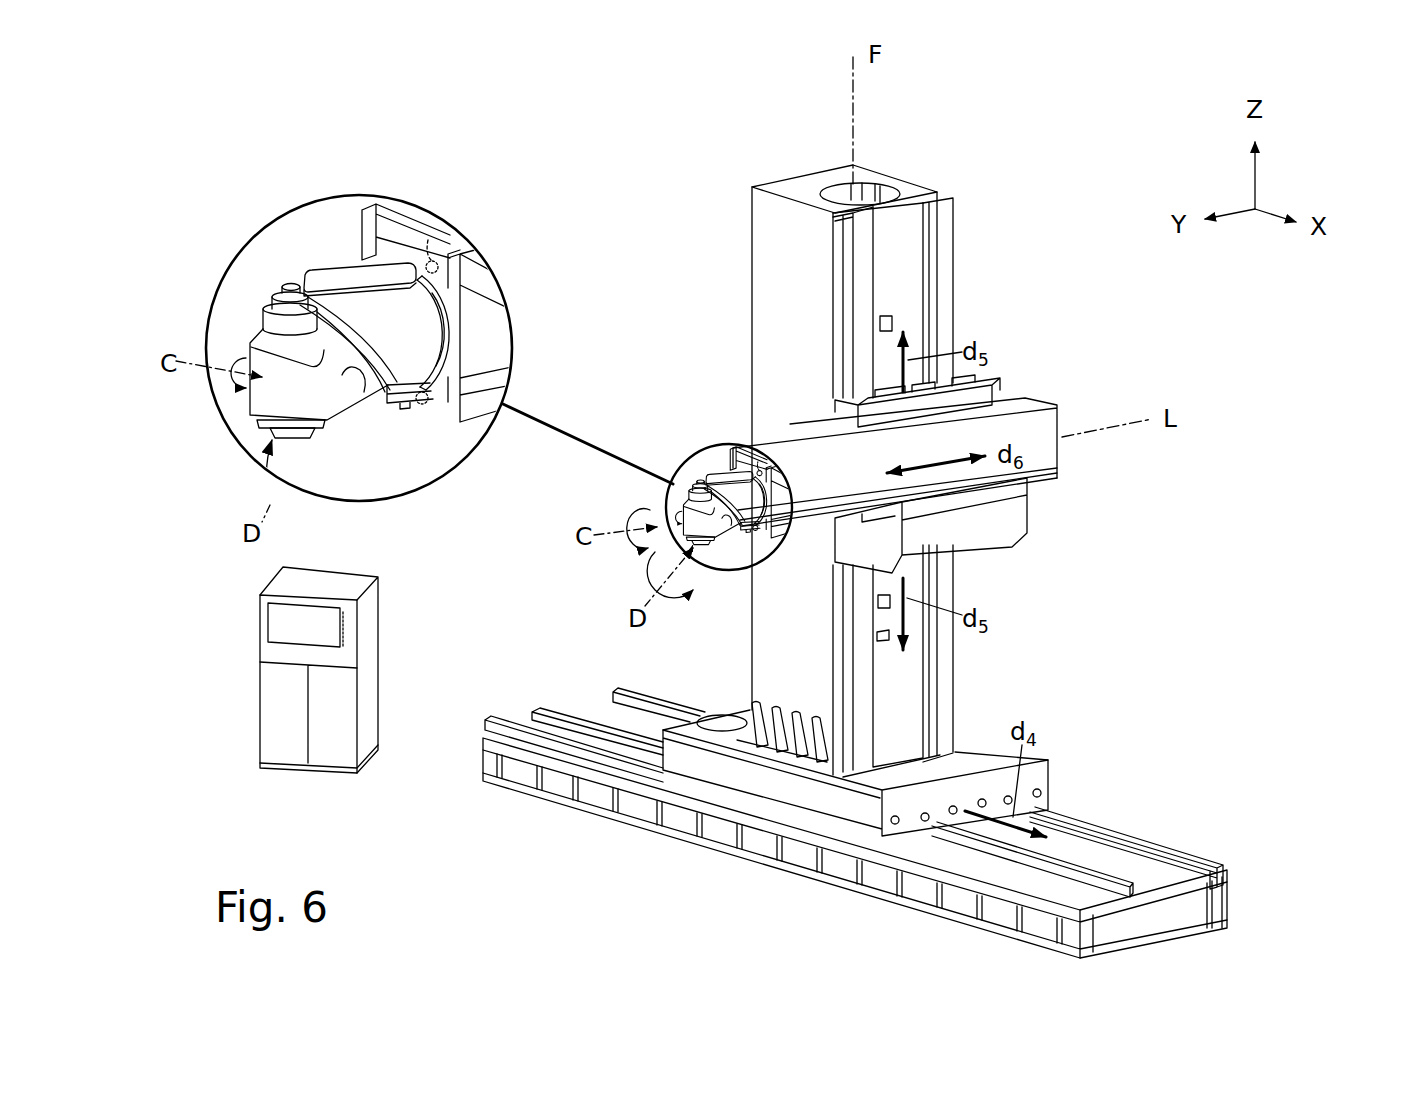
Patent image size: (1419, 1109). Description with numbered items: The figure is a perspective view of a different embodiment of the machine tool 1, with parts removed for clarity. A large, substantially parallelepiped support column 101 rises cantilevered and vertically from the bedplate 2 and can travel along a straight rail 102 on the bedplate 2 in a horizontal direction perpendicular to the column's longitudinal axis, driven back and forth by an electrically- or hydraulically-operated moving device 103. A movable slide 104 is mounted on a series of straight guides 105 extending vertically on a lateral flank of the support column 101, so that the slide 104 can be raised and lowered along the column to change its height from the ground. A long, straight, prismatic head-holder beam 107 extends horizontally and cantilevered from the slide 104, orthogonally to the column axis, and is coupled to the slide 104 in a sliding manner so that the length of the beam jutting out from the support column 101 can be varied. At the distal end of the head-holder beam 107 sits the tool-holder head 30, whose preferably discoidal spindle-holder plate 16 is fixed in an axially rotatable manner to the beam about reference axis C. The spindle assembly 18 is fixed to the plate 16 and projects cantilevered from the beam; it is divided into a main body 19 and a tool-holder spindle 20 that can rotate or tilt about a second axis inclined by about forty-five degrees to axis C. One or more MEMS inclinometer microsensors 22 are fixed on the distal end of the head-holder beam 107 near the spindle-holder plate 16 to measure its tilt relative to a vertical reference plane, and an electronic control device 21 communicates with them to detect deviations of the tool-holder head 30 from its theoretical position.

The machine tool 1 is at (1196, 609).
The bedplate 2 is at (800, 858).
The spindle-holder plate 16 is at (445, 332).
The spindle assembly 18 is at (257, 320).
The main body 19 is at (350, 272).
The tool-holder spindle 20 is at (267, 393).
The electronic control device 21 is at (272, 707).
The inclinometer microsensors 22 is at (428, 240).
The tool-holder head 30 is at (300, 266).
The support column 101 is at (770, 238).
The straight rail 102 is at (498, 718).
The moving device 103 is at (562, 713).
The movable slide 104 is at (1006, 522).
The straight guides 105 is at (947, 260).
The head-holder beam 107 is at (483, 297).